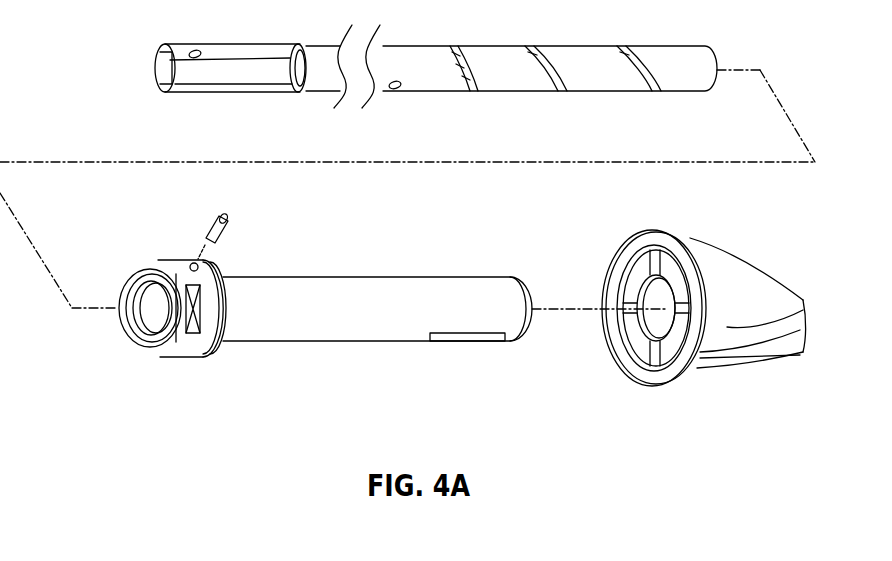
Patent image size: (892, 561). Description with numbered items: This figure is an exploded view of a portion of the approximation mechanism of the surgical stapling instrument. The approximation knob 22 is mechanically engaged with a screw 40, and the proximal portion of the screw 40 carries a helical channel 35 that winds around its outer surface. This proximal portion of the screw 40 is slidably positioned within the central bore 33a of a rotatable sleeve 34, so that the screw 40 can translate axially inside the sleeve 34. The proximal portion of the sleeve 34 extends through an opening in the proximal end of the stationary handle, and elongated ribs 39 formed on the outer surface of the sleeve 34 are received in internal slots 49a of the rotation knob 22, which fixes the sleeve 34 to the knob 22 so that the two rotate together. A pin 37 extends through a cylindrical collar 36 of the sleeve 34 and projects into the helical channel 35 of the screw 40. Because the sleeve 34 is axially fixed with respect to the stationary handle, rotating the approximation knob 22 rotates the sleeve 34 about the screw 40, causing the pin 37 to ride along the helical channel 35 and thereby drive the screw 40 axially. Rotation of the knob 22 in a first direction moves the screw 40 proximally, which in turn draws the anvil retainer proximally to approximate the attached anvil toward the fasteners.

The approximation knob 22 is at (692, 300).
The central bore 33a is at (148, 296).
The rotatable sleeve 34 is at (377, 334).
The helical channel 35 is at (652, 92).
The cylindrical collar 36 is at (144, 323).
The pin 37 is at (205, 228).
The elongated ribs 39 is at (470, 344).
The screw 40 is at (440, 84).
The internal slots 49a is at (640, 281).